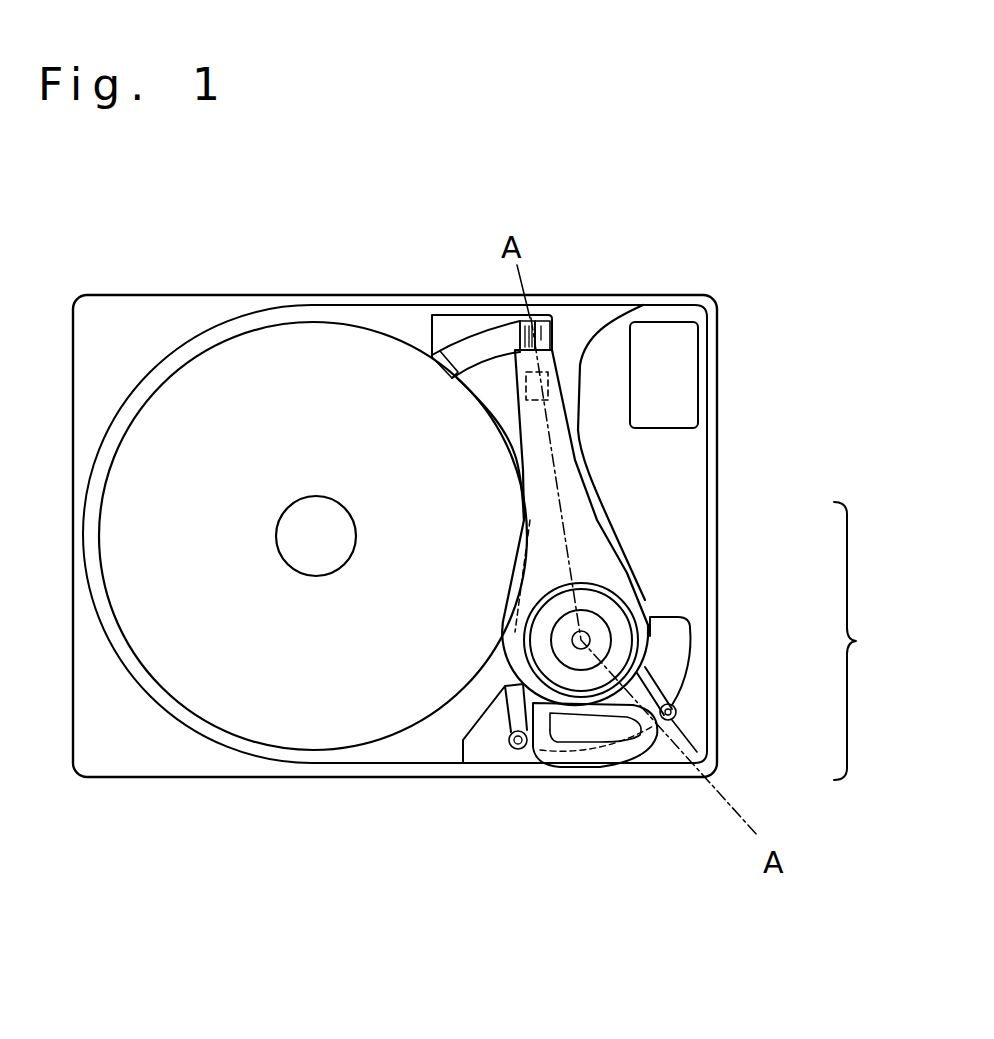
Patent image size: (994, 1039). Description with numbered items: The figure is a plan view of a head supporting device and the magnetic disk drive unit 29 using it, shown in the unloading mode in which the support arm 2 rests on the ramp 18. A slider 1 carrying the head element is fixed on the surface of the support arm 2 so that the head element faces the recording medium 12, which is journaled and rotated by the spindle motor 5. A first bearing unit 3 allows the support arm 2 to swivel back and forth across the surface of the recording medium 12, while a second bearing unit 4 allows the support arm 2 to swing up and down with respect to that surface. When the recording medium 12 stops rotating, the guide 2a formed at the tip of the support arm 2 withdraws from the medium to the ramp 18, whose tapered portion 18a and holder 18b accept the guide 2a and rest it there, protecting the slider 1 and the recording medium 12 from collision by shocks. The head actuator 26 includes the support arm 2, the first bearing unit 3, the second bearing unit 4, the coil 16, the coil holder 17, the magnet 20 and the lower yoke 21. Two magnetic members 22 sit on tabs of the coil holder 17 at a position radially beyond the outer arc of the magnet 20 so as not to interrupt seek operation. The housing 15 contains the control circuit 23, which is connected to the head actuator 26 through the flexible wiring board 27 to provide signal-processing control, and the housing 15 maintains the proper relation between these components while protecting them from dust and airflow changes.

The slider 1 is at (550, 377).
The support arm 2 is at (568, 492).
The guide 2a is at (533, 330).
The first bearing unit 3 is at (588, 627).
The second bearing unit 4 is at (640, 630).
The spindle motor 5 is at (316, 534).
The recording medium 12 is at (178, 408).
The housing 15 is at (134, 748).
The coil 16 is at (697, 752).
The coil holder 17 is at (676, 712).
The ramp 18 is at (447, 330).
The tapered portion 18a is at (488, 347).
The holder 18b is at (540, 333).
The magnet 20 is at (667, 662).
The lower yoke 21 is at (700, 647).
The magnetic member 22 is at (660, 711).
The control circuit 23 is at (680, 368).
The head actuator 26 is at (869, 641).
The flexible wiring board 27 is at (597, 470).
The magnetic disk drive unit 29 is at (456, 901).